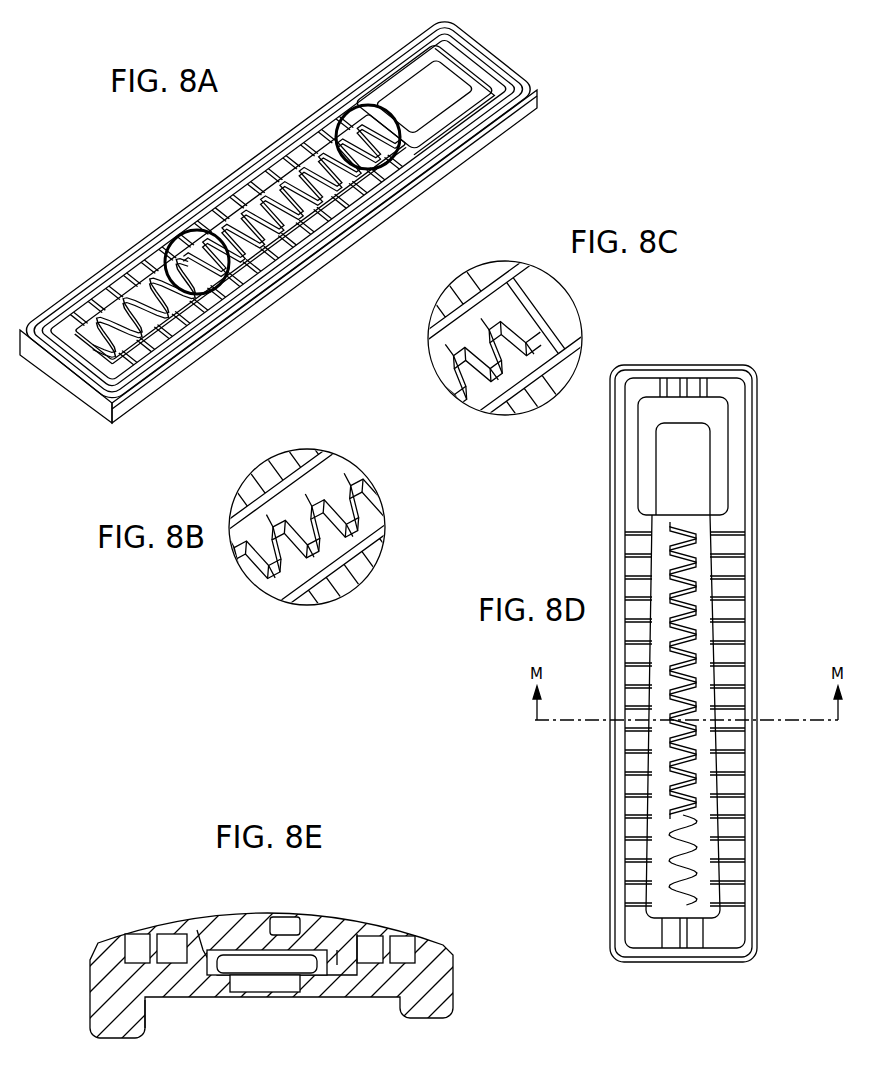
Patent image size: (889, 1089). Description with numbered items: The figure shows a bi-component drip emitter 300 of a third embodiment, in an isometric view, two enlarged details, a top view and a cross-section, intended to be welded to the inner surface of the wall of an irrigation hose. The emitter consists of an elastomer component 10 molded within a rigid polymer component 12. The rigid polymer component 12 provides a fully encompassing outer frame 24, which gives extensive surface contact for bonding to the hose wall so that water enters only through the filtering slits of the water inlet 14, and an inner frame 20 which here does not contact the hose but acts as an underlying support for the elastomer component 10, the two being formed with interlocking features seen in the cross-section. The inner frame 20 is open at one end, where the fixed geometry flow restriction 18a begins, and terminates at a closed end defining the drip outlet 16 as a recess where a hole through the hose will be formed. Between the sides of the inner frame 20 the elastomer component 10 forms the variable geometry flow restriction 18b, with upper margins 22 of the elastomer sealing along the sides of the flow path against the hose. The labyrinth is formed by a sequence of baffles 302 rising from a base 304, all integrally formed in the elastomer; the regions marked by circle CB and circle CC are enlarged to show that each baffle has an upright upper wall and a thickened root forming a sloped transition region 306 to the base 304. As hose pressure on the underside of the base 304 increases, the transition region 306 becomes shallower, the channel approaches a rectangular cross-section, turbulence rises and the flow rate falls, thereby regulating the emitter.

In FIG. 8A, the drip emitter 300 is at (596, 46).
In FIG. 8D, the drip emitter 300 is at (738, 334).
In FIG. 8E, the drip emitter 300 is at (414, 880).
In FIG. 8A, the elastomer component 10 is at (222, 181).
In FIG. 8D, the elastomer component 10 is at (660, 598).
In FIG. 8E, the elastomer component 10 is at (187, 920).
In FIG. 8A, the rigid polymer component 12 is at (85, 406).
In FIG. 8D, the rigid polymer component 12 is at (623, 895).
In FIG. 8E, the rigid polymer component 12 is at (125, 1028).
In FIG. 8A, the water inlet slits 14 is at (67, 324).
In FIG. 8D, the water inlet slits 14 is at (680, 930).
In FIG. 8A, the drip outlet 16 is at (447, 100).
In FIG. 8D, the drip outlet 16 is at (663, 480).
In FIG. 8A, the constant geometry flow restriction 18a is at (143, 322).
In FIG. 8D, the constant geometry flow restriction 18a is at (670, 862).
In FIG. 8A, the variable geometry flow restriction 18b is at (283, 235).
In FIG. 8D, the variable geometry flow restriction 18b is at (672, 725).
In FIG. 8E, the inner frame 20 is at (350, 963).
In FIG. 8A, the margins 22 is at (327, 192).
In FIG. 8E, the margins 22 is at (342, 920).
In FIG. 8A, the outer frame 24 is at (270, 141).
In FIG. 8E, the outer frame 24 is at (433, 935).
In FIG. 8B, the baffles 302 is at (267, 477).
In FIG. 8C, the baffles 302 is at (433, 322).
In FIG. 8E, the baffles 302 is at (263, 920).
In FIG. 8B, the base 304 is at (263, 587).
In FIG. 8C, the base 304 is at (463, 400).
In FIG. 8E, the base 304 is at (290, 980).
In FIG. 8B, the transition region 306 is at (320, 477).
In FIG. 8C, the transition region 306 is at (512, 272).
In FIG. 8E, the transition region 306 is at (283, 917).
In FIG. 8A, the circle CB is at (157, 240).
In FIG. 8A, the circle CC is at (367, 107).